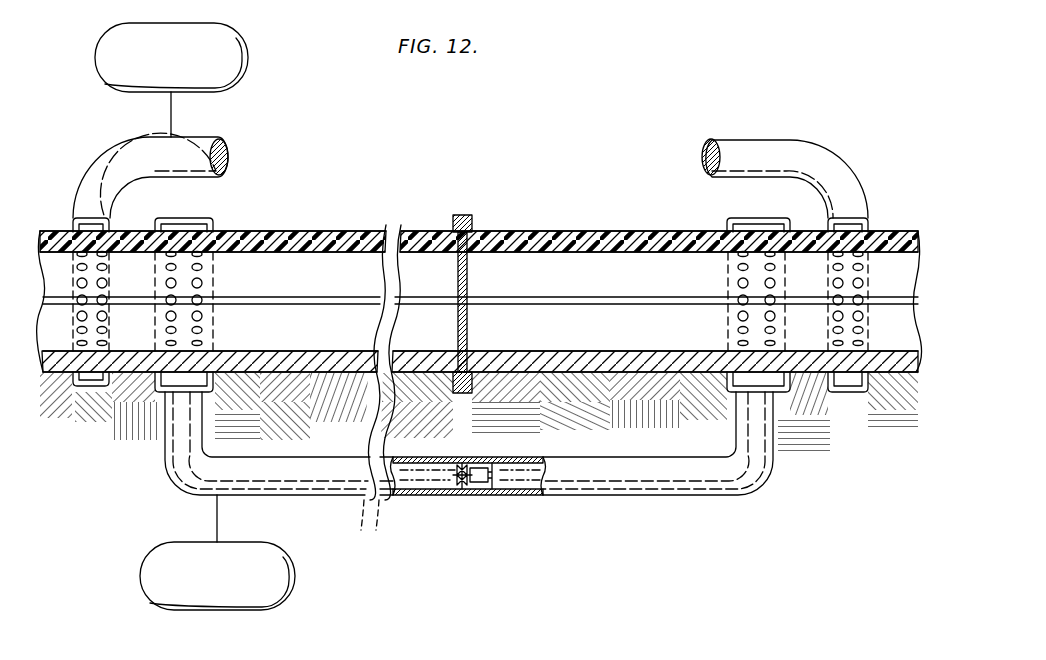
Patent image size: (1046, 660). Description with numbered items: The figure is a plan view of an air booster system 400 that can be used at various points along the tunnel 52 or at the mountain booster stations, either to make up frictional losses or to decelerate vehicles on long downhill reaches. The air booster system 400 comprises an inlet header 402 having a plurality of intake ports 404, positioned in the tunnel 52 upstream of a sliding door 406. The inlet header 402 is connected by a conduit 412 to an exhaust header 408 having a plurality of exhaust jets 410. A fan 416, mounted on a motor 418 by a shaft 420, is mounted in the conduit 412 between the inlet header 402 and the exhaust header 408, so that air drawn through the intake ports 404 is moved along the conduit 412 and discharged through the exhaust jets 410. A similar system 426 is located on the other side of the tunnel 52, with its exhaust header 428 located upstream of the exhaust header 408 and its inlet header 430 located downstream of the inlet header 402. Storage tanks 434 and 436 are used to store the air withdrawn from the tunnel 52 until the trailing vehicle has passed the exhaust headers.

The tunnel 52 is at (435, 226).
The air booster system 400 is at (586, 512).
The inlet header 402 is at (732, 220).
The intake ports 404 is at (738, 283).
The sliding door 406 is at (468, 278).
The exhaust header 408 is at (205, 279).
The exhaust jets 410 is at (214, 276).
The conduit 412 is at (305, 483).
The fan 416 is at (459, 496).
The motor 418 is at (484, 496).
The shaft 420 is at (476, 457).
The similar system 426 is at (242, 130).
The exhaust header 428 is at (98, 382).
The inlet header 430 is at (875, 280).
The storage tank 434 is at (294, 564).
The storage tank 436 is at (234, 45).